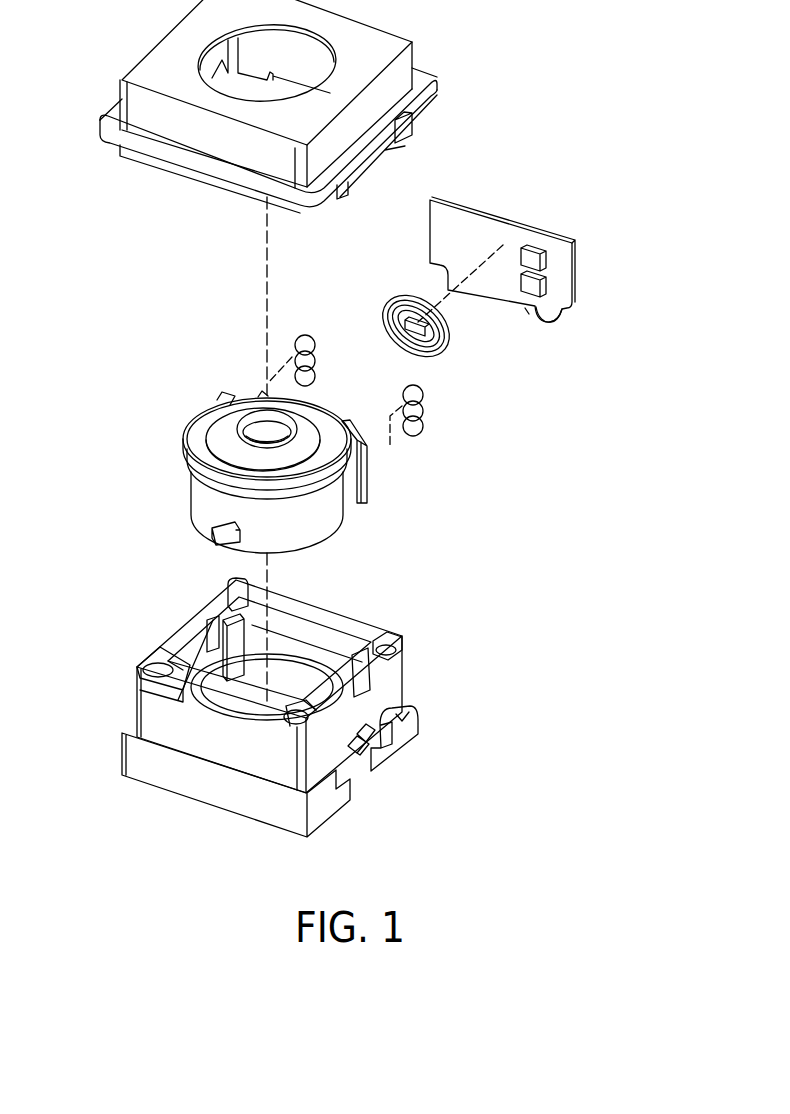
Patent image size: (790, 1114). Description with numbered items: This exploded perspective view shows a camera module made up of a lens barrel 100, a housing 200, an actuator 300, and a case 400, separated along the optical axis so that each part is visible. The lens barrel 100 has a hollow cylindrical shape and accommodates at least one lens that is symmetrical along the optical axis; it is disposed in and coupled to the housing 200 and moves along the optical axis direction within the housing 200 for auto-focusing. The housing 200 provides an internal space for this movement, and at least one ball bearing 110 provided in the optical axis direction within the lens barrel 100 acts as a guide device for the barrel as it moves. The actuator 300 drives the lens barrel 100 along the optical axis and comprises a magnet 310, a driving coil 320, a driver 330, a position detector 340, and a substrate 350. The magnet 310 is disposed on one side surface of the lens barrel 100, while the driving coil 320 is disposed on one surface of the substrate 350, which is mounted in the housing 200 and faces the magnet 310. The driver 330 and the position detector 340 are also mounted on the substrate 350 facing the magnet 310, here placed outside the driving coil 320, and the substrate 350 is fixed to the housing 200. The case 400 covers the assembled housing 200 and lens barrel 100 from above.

The lens barrel 100 is at (192, 482).
The ball bearing 110 is at (424, 429).
The housing 200 is at (198, 787).
The actuator 300 is at (718, 310).
The magnet 310 is at (345, 417).
The driving coil 320 is at (449, 333).
The driver 330 is at (547, 263).
The position detector 340 is at (561, 318).
The substrate 350 is at (527, 312).
The case 400 is at (124, 108).